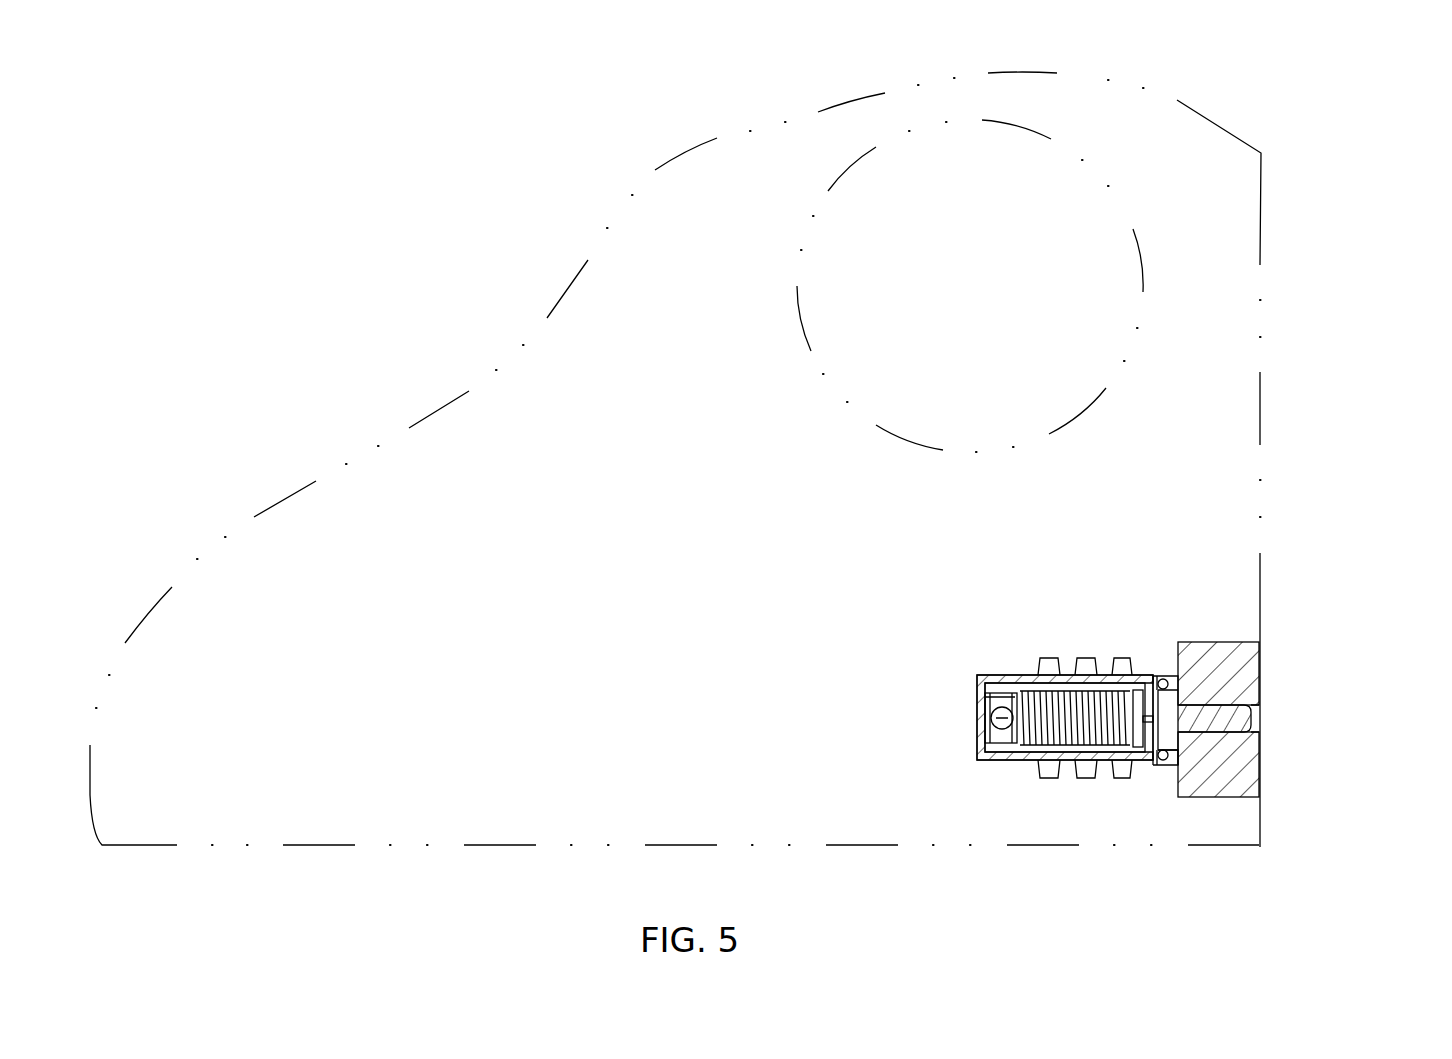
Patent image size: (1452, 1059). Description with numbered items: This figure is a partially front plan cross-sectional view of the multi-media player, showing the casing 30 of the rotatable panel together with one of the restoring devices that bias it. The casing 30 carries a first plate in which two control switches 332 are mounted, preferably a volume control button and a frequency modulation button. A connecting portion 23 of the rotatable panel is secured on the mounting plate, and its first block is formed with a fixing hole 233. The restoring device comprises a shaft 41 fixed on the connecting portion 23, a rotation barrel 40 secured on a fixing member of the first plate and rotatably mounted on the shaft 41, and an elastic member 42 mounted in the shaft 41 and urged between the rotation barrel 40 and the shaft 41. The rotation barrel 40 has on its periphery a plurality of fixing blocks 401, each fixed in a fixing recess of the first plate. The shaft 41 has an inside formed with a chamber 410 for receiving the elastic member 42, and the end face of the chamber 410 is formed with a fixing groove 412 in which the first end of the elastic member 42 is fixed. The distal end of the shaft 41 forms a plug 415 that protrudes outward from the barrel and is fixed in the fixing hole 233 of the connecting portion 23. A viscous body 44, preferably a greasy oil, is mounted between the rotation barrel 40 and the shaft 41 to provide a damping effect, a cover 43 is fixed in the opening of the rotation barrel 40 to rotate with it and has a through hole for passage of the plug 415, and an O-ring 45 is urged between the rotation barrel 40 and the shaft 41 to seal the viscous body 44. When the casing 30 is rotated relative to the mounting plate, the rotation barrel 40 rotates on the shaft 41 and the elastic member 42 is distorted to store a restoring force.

The casing 30 is at (1276, 371).
The control switch 332 is at (1130, 226).
The connecting portion 23 is at (1263, 655).
The fixing hole 233 is at (1255, 718).
The rotation barrel 40 is at (972, 675).
The fixing block 401 is at (1045, 662).
The chamber 410 is at (1130, 690).
The fixing groove 412 is at (1156, 679).
The plug 415 is at (1232, 706).
The shaft 41 is at (1148, 747).
The elastic member 42 is at (1022, 740).
The cover 43 is at (1177, 752).
The viscous body 44 is at (1138, 742).
The O-ring 45 is at (1165, 680).